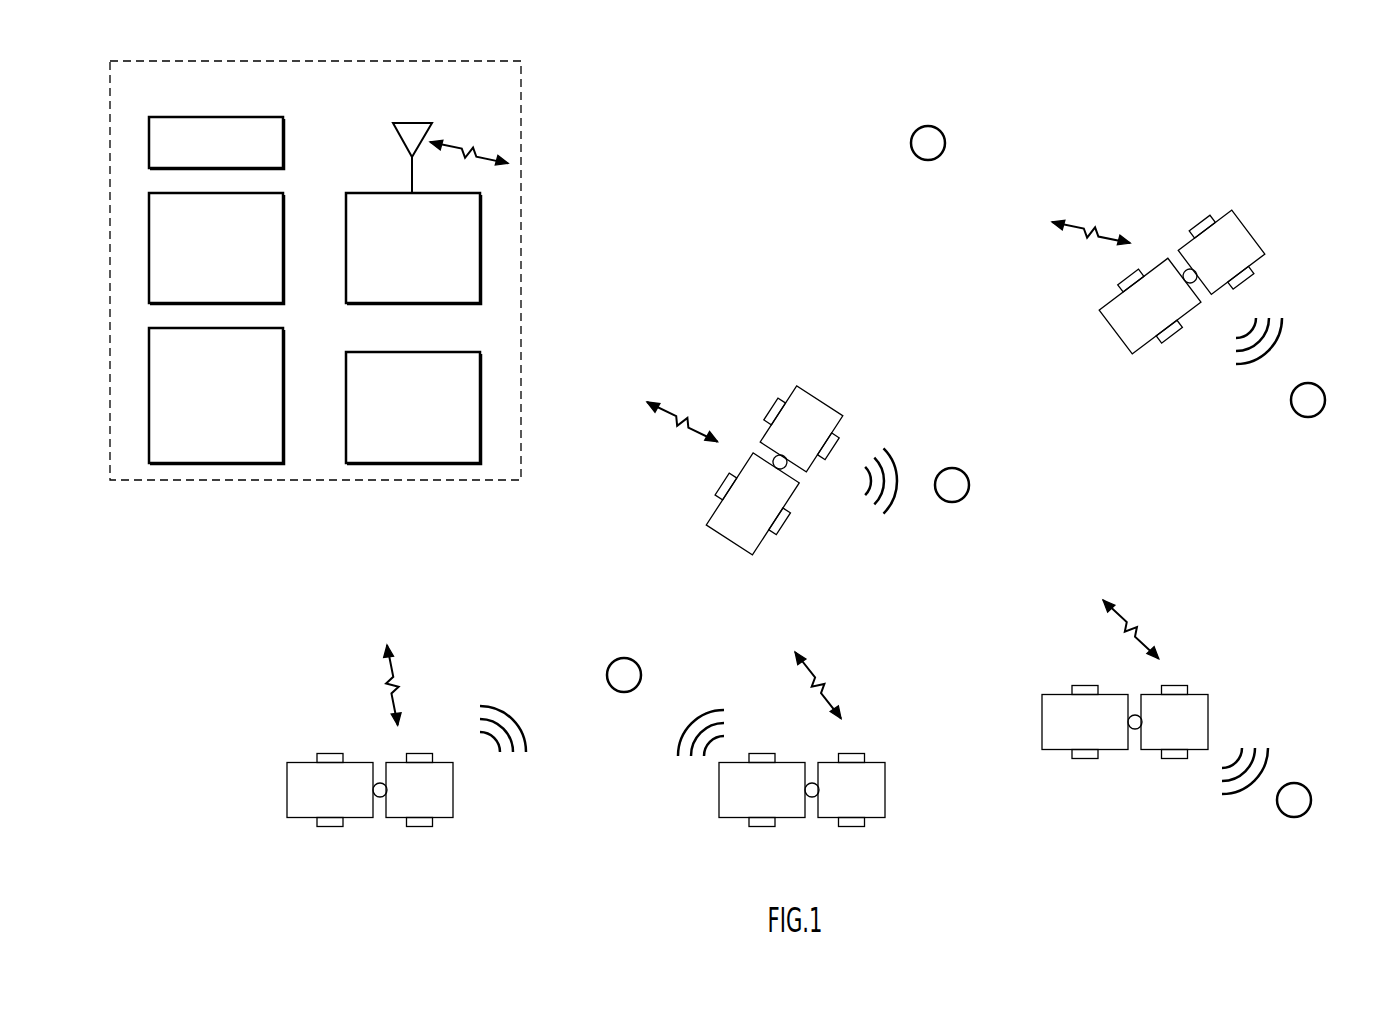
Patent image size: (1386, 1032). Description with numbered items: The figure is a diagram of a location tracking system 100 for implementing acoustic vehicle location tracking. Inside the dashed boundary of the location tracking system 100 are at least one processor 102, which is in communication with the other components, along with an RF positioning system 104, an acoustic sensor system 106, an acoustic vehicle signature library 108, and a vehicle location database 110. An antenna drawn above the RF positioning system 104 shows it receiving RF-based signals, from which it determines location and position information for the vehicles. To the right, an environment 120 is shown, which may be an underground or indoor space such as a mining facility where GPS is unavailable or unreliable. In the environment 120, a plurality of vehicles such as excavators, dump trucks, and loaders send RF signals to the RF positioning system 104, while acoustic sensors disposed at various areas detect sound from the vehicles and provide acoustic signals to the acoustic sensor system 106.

The location tracking system 100 is at (445, 61).
The processor 102 is at (284, 154).
The RF positioning system 104 is at (425, 303).
The acoustic sensor system 106 is at (284, 242).
The acoustic vehicle signature library 108 is at (284, 394).
The vehicle location database 110 is at (346, 423).
The environment 120 is at (1245, 157).